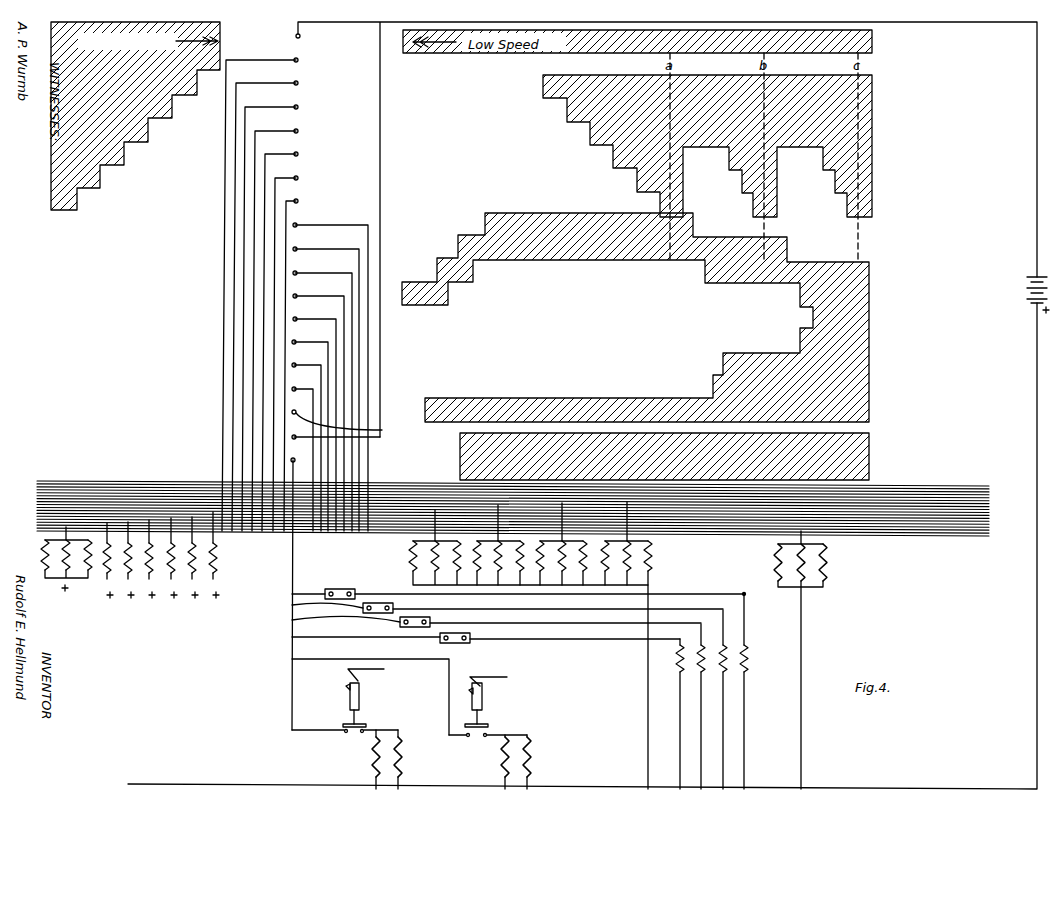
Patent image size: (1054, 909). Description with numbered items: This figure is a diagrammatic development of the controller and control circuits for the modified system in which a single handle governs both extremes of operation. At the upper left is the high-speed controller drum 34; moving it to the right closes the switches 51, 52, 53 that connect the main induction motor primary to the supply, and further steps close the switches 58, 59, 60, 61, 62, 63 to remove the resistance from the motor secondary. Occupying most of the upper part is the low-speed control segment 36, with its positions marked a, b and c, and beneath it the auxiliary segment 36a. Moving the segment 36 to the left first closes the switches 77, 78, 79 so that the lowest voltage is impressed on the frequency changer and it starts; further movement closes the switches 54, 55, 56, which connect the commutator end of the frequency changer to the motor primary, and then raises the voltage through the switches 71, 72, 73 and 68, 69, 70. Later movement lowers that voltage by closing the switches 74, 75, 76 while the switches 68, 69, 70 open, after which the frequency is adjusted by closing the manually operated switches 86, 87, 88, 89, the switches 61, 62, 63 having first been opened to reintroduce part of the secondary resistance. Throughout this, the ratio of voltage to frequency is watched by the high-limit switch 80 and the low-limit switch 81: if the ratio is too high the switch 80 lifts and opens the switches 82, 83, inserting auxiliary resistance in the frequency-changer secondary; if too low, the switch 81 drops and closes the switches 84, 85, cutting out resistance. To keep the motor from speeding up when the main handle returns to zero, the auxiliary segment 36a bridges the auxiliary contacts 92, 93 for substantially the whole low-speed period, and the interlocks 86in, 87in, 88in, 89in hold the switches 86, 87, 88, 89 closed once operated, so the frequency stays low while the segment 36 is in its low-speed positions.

The controller drum 34 is at (112, 155).
The low-speed control segment 36 is at (850, 117).
The auxiliary segment 36a is at (869, 450).
The switch 51 is at (29, 559).
The switch 52 is at (41, 584).
The switch 53 is at (182, 340).
The switch 54 is at (778, 574).
The switch 55 is at (797, 566).
The switch 56 is at (822, 590).
The switch 58 is at (196, 345).
The switch 59 is at (206, 357).
The switch 60 is at (217, 369).
The switch 61 is at (227, 380).
The switch 62 is at (238, 392).
The switch 63 is at (283, 404).
The switch 68 is at (467, 508).
The switch 69 is at (374, 407).
The switch 70 is at (397, 407).
The switch 71 is at (403, 419).
The switch 72 is at (406, 419).
The switch 73 is at (429, 419).
The switch 74 is at (435, 431).
The switch 75 is at (438, 431).
The switch 76 is at (460, 431).
The switch 77 is at (467, 442).
The switch 78 is at (470, 442).
The switch 79 is at (493, 442).
The high-limit switch 80 is at (360, 695).
The low-limit switch 81 is at (483, 695).
The switch 82 is at (364, 759).
The switch 83 is at (409, 759).
The switch 84 is at (493, 762).
The switch 85 is at (537, 762).
The manually operated switch 86 is at (678, 672).
The manually operated switch 87 is at (498, 567).
The manually operated switch 88 is at (507, 578).
The manually operated switch 89 is at (517, 590).
The interlock 86in is at (472, 645).
The interlock 87in is at (475, 620).
The interlock 88in is at (486, 604).
The interlock 89in is at (518, 587).
The auxiliary contact 92 is at (291, 585).
The auxiliary contact 93 is at (290, 461).